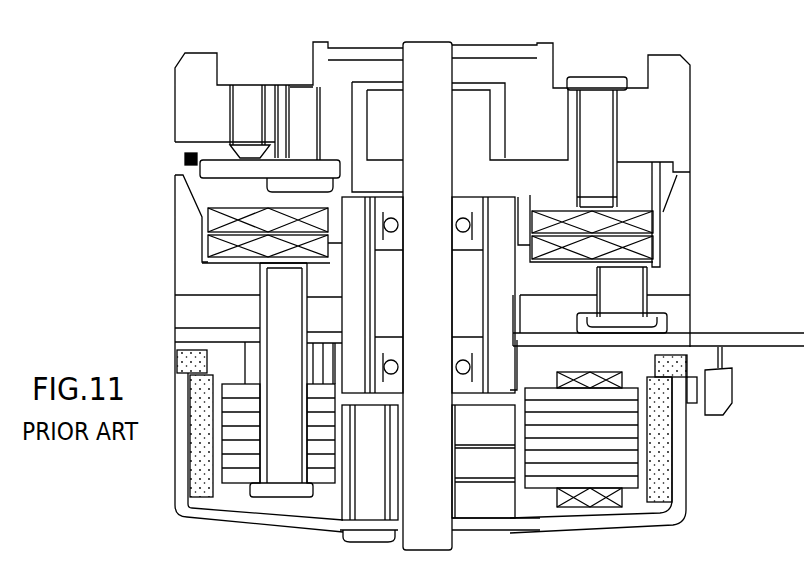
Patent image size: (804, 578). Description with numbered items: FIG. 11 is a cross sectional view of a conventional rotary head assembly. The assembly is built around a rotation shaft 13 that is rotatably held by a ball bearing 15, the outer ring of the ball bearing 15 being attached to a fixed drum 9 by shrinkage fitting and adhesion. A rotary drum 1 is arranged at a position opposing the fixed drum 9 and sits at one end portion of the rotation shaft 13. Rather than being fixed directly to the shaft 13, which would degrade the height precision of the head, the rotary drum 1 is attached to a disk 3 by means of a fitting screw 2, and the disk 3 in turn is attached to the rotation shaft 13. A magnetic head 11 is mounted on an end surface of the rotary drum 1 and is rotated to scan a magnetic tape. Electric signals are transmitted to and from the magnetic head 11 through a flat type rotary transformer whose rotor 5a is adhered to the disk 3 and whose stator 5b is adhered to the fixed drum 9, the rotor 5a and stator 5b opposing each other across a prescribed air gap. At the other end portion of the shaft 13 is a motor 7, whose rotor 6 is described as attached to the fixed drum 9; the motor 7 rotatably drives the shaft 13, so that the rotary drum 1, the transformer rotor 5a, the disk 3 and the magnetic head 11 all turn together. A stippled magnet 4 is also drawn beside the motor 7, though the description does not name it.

The rotary drum 1 is at (668, 77).
The fitting screw 2 is at (602, 76).
The disk 3 is at (633, 172).
The magnet 4 is at (203, 492).
The rotor of rotary transformer 5a is at (647, 223).
The stator of rotary transformer 5b is at (647, 252).
The rotor of the motor 6 is at (243, 483).
The motor 7 is at (686, 494).
The fixed drum 9 is at (183, 250).
The magnetic head 11 is at (186, 155).
The rotation shaft 13 is at (435, 49).
The ball bearing 15 is at (470, 198).